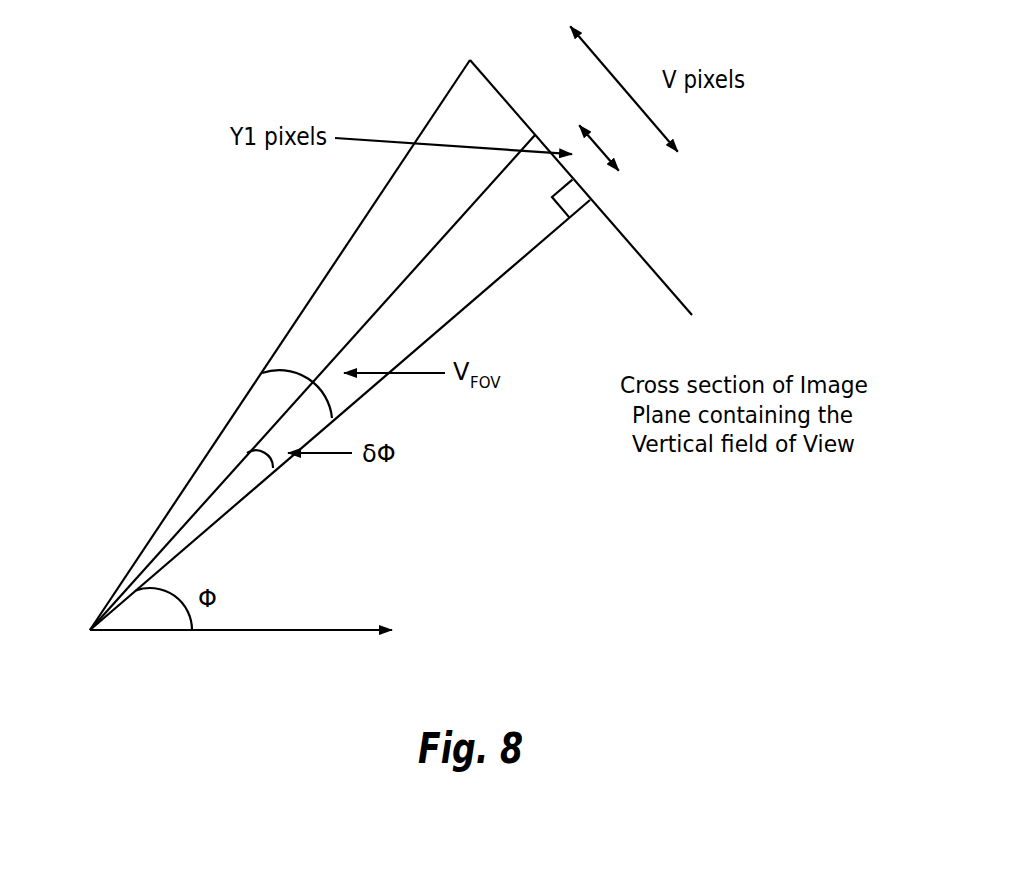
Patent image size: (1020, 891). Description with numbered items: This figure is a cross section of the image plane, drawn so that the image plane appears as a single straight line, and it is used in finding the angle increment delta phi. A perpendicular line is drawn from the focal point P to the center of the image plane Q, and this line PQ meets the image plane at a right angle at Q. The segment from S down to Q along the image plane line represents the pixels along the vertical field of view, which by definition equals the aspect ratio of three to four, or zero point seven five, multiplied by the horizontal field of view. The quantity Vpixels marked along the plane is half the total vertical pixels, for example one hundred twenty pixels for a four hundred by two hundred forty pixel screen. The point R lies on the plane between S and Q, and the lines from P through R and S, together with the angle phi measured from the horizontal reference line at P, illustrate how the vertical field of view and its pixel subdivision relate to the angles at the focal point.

The focal point P is at (228, 642).
The center of the image plane Q is at (354, 404).
The point R on image plane R is at (322, 366).
The end point of vertical field of view segment S is at (282, 328).